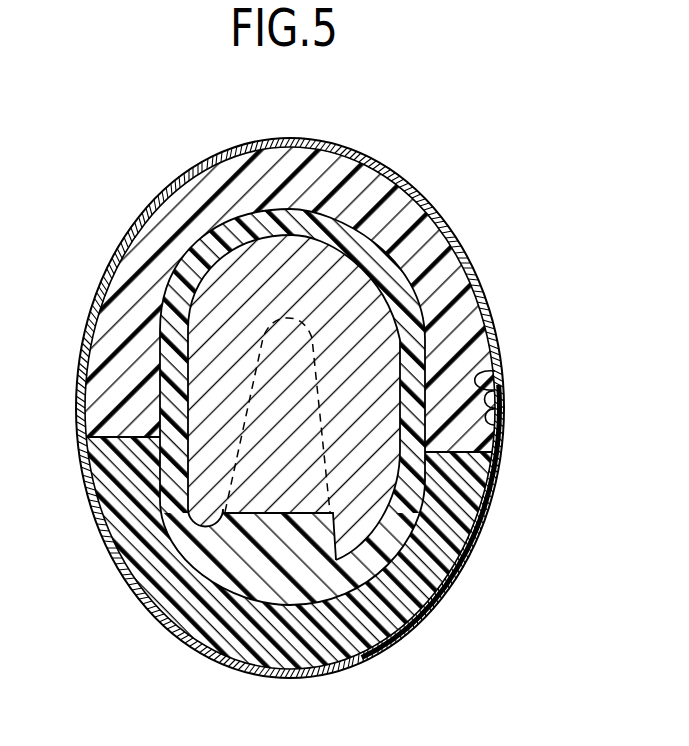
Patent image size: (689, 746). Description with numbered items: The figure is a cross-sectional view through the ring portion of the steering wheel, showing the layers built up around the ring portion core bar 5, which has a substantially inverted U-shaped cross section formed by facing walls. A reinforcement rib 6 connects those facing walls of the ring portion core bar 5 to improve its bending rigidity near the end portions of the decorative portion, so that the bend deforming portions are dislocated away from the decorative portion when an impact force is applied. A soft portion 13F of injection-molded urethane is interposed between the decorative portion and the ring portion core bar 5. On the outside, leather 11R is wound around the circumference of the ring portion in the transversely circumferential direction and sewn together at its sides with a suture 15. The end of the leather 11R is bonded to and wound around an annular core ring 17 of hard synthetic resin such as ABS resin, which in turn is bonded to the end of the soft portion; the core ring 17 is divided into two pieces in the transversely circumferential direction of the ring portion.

The ring portion core bar 5 is at (237, 273).
The reinforcement rib 6 is at (283, 502).
The leather 11R is at (142, 600).
The soft portion 13F is at (400, 311).
The suture 15 is at (483, 372).
The core ring 17 is at (367, 180).